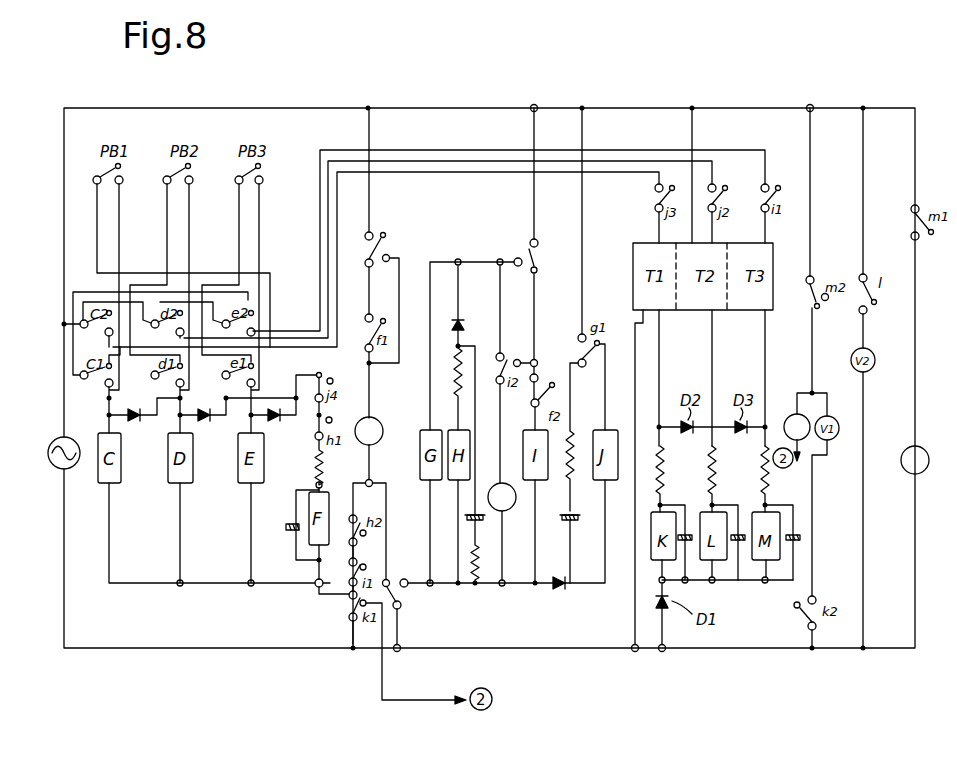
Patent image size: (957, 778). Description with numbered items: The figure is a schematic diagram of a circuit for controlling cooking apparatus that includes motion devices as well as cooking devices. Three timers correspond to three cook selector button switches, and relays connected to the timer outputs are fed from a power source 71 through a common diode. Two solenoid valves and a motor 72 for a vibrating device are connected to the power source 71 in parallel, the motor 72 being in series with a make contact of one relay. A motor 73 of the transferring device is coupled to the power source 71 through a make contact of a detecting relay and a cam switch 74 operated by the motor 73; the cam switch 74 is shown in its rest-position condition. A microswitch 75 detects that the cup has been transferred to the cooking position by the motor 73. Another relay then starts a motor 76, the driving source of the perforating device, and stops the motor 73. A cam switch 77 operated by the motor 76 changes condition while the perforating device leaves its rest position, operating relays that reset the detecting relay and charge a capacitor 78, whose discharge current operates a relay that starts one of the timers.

The power source 71 is at (53, 467).
The motor for a vibrating device 72 is at (921, 452).
The motor of the transferring device 73 is at (382, 421).
The cam switch 74 is at (373, 245).
The microswitch 75 is at (407, 595).
The motor 76 is at (510, 483).
The cam switch 77 is at (528, 248).
The capacitor 78 is at (575, 522).